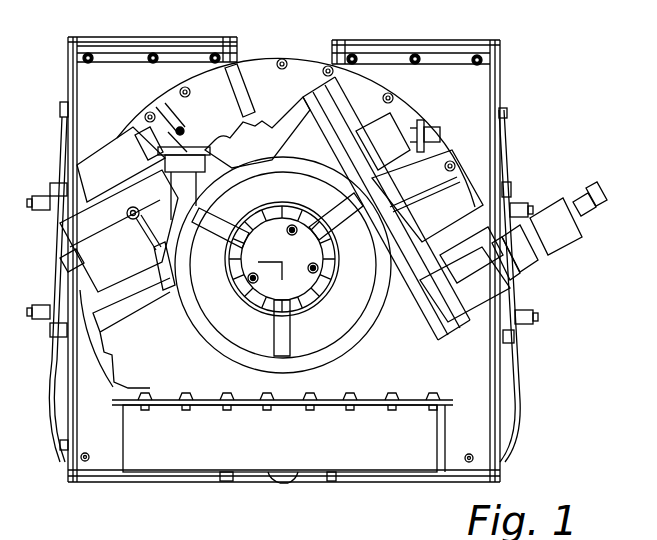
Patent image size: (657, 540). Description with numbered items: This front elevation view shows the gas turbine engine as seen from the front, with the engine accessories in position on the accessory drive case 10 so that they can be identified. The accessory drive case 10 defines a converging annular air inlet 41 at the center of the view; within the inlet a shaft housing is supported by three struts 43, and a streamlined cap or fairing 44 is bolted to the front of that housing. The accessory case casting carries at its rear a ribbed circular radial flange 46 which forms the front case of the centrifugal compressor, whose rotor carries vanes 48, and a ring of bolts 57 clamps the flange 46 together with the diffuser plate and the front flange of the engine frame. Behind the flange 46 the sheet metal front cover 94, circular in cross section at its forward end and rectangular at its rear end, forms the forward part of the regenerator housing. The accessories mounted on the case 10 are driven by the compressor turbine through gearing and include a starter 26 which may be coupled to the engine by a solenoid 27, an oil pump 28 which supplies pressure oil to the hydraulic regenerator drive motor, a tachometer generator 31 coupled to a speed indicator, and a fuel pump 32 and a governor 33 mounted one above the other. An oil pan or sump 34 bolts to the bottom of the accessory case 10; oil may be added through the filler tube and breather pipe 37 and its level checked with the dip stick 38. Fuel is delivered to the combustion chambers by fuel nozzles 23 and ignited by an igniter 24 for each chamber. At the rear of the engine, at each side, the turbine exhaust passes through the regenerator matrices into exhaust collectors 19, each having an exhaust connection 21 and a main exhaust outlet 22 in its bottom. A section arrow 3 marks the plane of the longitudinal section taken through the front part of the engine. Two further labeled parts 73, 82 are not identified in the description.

The section line 3 is at (280, 493).
The accessory drive case 10 is at (133, 378).
The exhaust collectors 19 is at (425, 45).
The exhaust connection 21 is at (514, 413).
The main exhaust outlets 22 is at (118, 476).
The fuel nozzles 23 is at (534, 314).
The igniter 24 is at (515, 347).
The starter 26 is at (98, 218).
The solenoid 27 is at (112, 152).
The oil pump 28 is at (395, 132).
The tachometer generator 31 is at (478, 215).
The fuel pump 32 is at (500, 283).
The governor 33 is at (550, 245).
The oil pan or sump 34 is at (163, 457).
The filler tube and breather pipe 37 is at (181, 152).
The dip stick 38 is at (135, 208).
The converging annular air inlet 41 is at (323, 338).
The struts 43 is at (278, 330).
The streamlined cap or fairing 44 is at (303, 238).
The ribbed circular radial flange 46 is at (245, 68).
The vanes 48 is at (257, 222).
The bolts 57 is at (474, 460).
The frame 73 is at (42, 254).
The bar 82 is at (340, 130).
The sheet metal front cover 94 is at (475, 100).